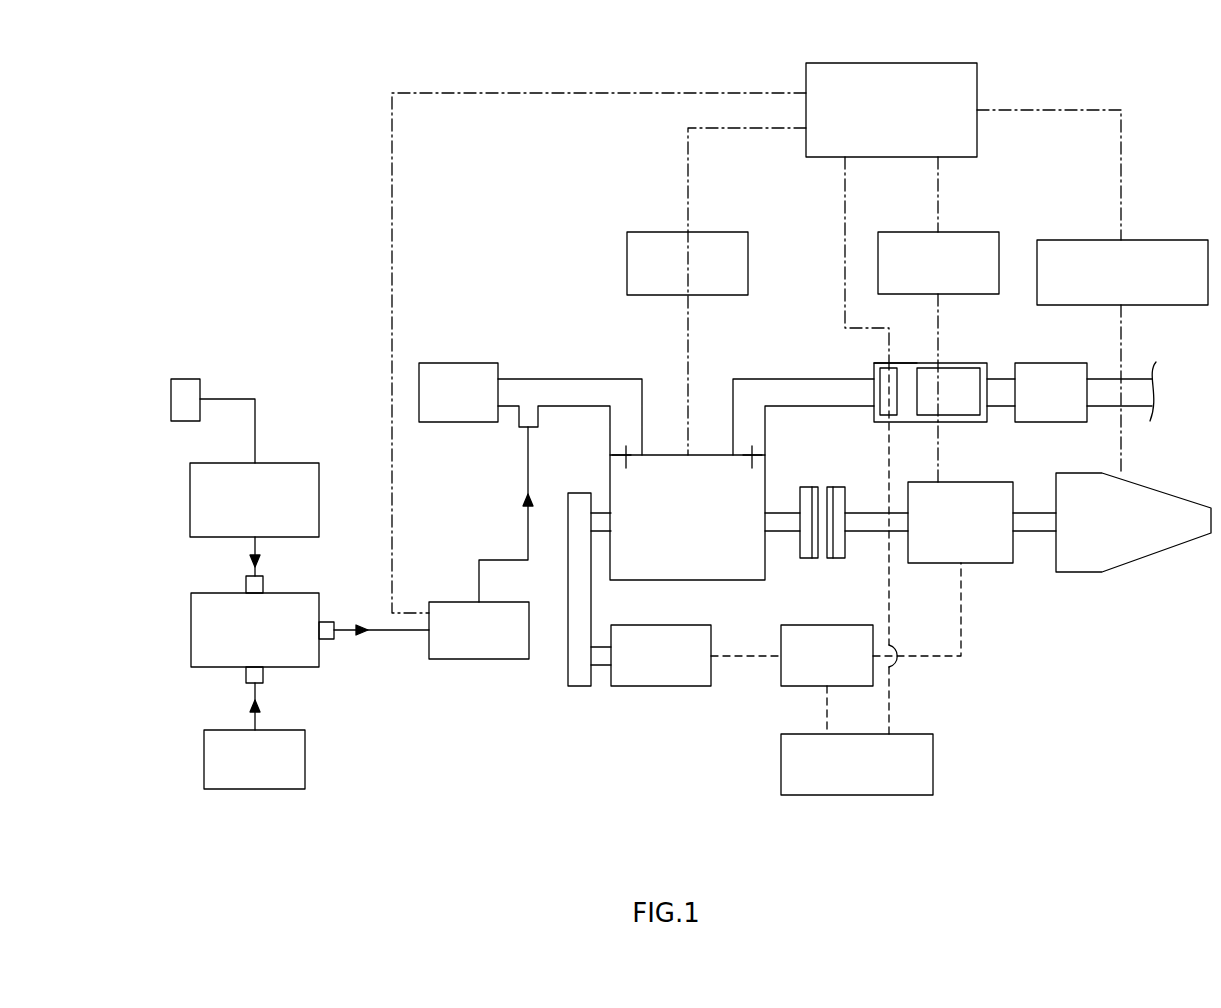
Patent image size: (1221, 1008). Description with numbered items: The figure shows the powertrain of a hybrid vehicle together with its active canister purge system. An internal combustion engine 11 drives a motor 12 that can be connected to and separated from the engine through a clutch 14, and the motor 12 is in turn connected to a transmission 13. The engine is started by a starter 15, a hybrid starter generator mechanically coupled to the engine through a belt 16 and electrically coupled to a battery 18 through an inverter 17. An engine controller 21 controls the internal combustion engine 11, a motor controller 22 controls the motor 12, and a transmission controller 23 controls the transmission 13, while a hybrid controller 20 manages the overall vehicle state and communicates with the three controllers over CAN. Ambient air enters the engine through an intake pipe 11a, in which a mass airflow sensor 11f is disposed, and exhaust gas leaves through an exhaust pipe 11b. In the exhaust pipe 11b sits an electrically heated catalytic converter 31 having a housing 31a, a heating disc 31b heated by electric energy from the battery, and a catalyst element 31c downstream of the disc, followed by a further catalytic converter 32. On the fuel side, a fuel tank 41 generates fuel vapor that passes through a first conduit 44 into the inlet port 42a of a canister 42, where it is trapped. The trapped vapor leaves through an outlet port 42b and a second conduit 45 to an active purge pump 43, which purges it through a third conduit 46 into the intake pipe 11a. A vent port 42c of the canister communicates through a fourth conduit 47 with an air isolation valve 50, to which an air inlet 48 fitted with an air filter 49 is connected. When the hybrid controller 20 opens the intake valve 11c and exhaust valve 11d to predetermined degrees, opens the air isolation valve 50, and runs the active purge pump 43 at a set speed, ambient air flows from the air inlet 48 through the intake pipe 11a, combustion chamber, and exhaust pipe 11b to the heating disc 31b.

The internal combustion engine 11 is at (738, 580).
The intake pipe 11a is at (568, 379).
The exhaust pipe 11b is at (776, 379).
The intake valve 11c is at (626, 447).
The exhaust valve 11d is at (757, 447).
The mass airflow sensor 11f is at (458, 363).
The motor 12 is at (1001, 563).
The transmission 13 is at (1139, 559).
The clutch 14 is at (820, 562).
The starter 15 is at (660, 686).
The belt 16 is at (568, 661).
The inverter 17 is at (781, 677).
The battery 18 is at (781, 768).
The hybrid controller 20 is at (886, 63).
The engine controller 21 is at (648, 232).
The motor controller 22 is at (980, 232).
The transmission controller 23 is at (1180, 240).
The electrically heated catalytic converter 31 is at (946, 365).
The housing 31a is at (908, 363).
The heating disc 31b is at (880, 374).
The catalyst element 31c is at (963, 375).
The catalytic converter 32 is at (1032, 363).
The fuel tank 41 is at (305, 759).
The canister 42 is at (319, 606).
The inlet port 42a is at (246, 677).
The outlet port 42b is at (327, 640).
The vent port 42c is at (263, 586).
The active purge pump 43 is at (479, 659).
The first conduit 44 is at (256, 690).
The second conduit 45 is at (395, 632).
The third conduit 46 is at (528, 532).
The fourth conduit 47 is at (255, 547).
The air inlet 48 is at (255, 408).
The air filter 49 is at (200, 385).
The air isolation valve 50 is at (190, 500).